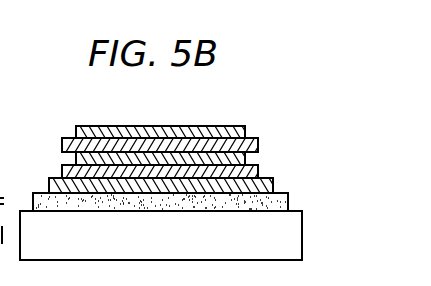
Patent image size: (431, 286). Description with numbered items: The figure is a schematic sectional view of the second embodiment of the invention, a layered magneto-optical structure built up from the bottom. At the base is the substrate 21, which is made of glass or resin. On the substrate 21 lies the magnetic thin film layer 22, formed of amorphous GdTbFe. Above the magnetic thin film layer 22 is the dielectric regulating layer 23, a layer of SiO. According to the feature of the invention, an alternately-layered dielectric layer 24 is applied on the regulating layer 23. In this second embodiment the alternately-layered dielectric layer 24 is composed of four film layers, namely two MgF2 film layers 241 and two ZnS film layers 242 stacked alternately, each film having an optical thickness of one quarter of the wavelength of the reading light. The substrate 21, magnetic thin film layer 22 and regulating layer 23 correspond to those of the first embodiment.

The substrate 21 is at (293, 232).
The magnetic thin film layer 22 is at (285, 203).
The dielectric regulating layer 23 is at (273, 187).
The alternately-layered dielectric layer 24 is at (46, 125).
The MgF2 film layer 241 is at (210, 126).
The ZnS film layer 242 is at (258, 142).